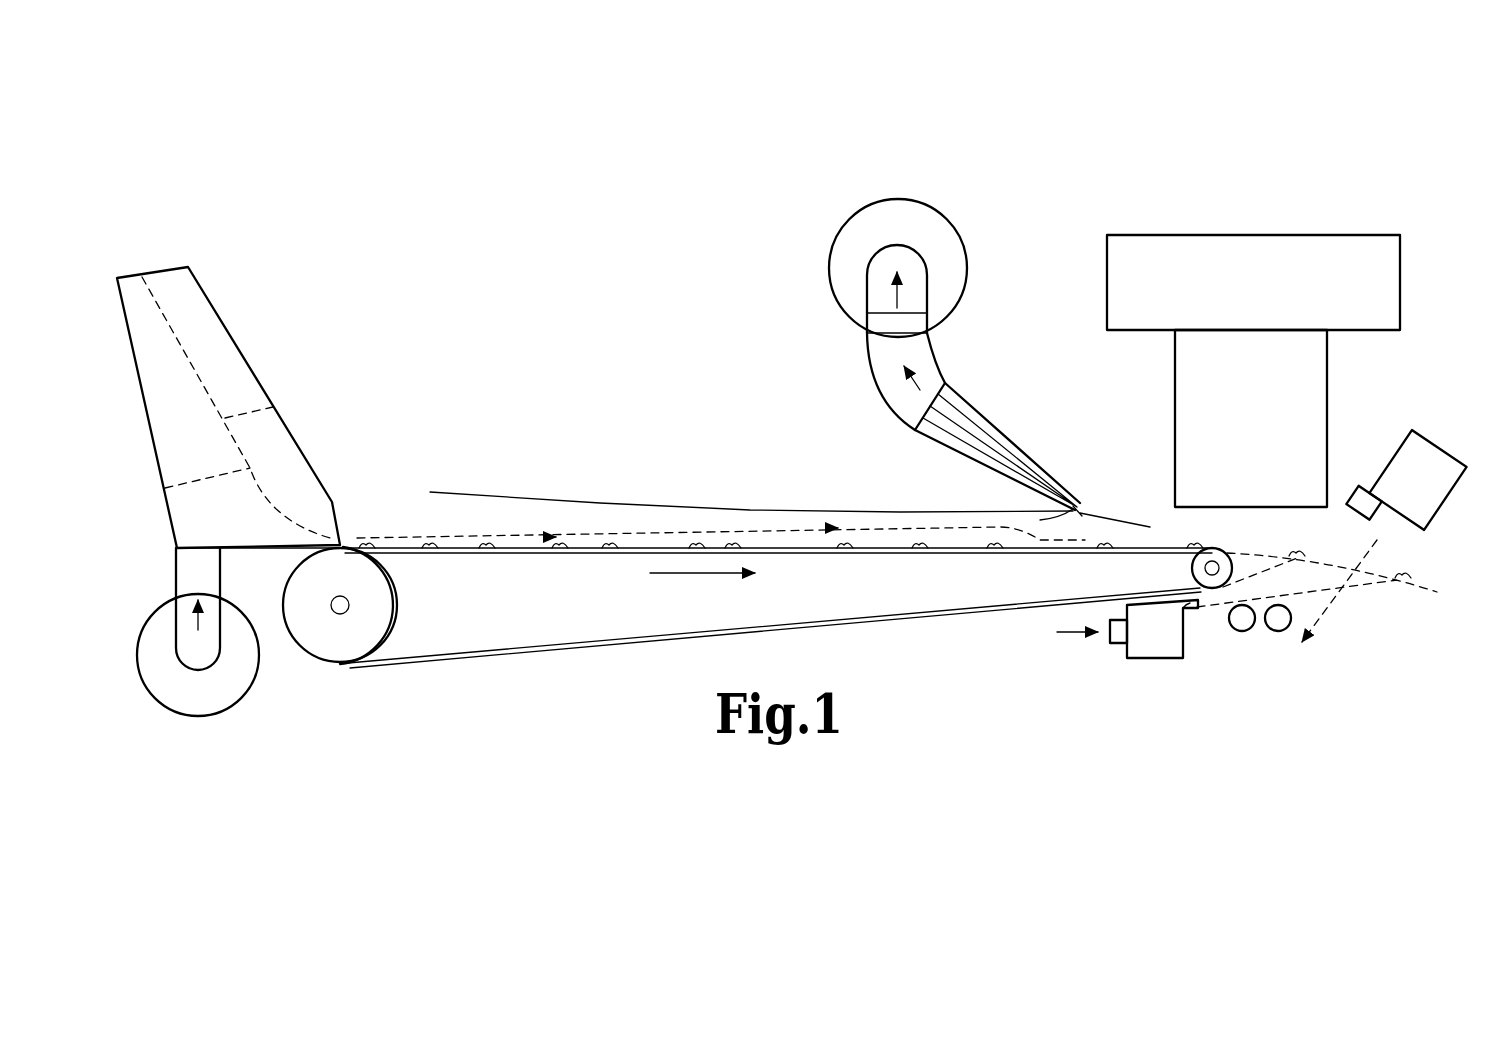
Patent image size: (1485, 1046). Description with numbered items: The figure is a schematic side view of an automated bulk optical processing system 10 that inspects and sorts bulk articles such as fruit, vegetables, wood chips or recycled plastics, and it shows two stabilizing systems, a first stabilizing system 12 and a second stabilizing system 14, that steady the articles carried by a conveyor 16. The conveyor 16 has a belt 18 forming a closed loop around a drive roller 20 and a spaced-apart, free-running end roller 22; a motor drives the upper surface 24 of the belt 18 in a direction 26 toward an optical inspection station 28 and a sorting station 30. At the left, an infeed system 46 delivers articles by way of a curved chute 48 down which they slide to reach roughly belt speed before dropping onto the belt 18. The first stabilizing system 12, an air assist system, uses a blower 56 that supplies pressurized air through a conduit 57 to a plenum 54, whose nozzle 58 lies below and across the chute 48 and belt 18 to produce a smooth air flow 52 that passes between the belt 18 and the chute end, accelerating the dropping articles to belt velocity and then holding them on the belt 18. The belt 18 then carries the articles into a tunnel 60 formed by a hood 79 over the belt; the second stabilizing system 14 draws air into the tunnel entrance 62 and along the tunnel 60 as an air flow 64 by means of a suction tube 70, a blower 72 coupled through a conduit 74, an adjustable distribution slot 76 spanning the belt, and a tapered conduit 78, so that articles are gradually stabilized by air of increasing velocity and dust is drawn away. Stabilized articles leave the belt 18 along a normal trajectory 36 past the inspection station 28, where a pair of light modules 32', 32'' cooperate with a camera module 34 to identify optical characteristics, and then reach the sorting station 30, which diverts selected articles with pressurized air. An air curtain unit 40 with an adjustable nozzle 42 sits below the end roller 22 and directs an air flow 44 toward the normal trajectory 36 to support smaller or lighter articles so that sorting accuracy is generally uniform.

The automated bulk optical processing system 10 is at (710, 408).
The first stabilizing system 12 is at (168, 556).
The second stabilizing system 14 is at (949, 350).
The conveyor 16 is at (546, 606).
The belt 18 is at (898, 554).
The drive roller 20 is at (338, 640).
The end roller 22 is at (1213, 547).
The upper surface 24 is at (532, 550).
The direction 26 is at (700, 574).
The optical inspection station 28 is at (1287, 438).
The sorting station 30 is at (1380, 475).
The light module 32' is at (1220, 418).
The light module 32'' is at (1274, 657).
The camera module 34 is at (1402, 295).
The normal trajectory 36 is at (1340, 565).
The air curtain unit 40 is at (1160, 660).
The adjustable nozzle 42 is at (1197, 607).
The air flow 44 is at (1260, 585).
The infeed system 46 is at (238, 320).
The curved chute 48 is at (273, 407).
The air flow 52 is at (497, 553).
The plenum 54 is at (217, 517).
The blower 56 is at (232, 690).
The conduit 57 is at (222, 585).
The nozzle 58 is at (400, 600).
The tunnel 60 is at (680, 518).
The tunnel entrance 62 is at (423, 512).
The air flow 64 is at (777, 528).
The suction tube 70 is at (935, 360).
The blower 72 is at (935, 242).
The conduit 74 is at (930, 290).
The adjustable distribution slot 76 is at (1082, 508).
The tapered conduit 78 is at (1020, 437).
The hood 79 is at (590, 498).